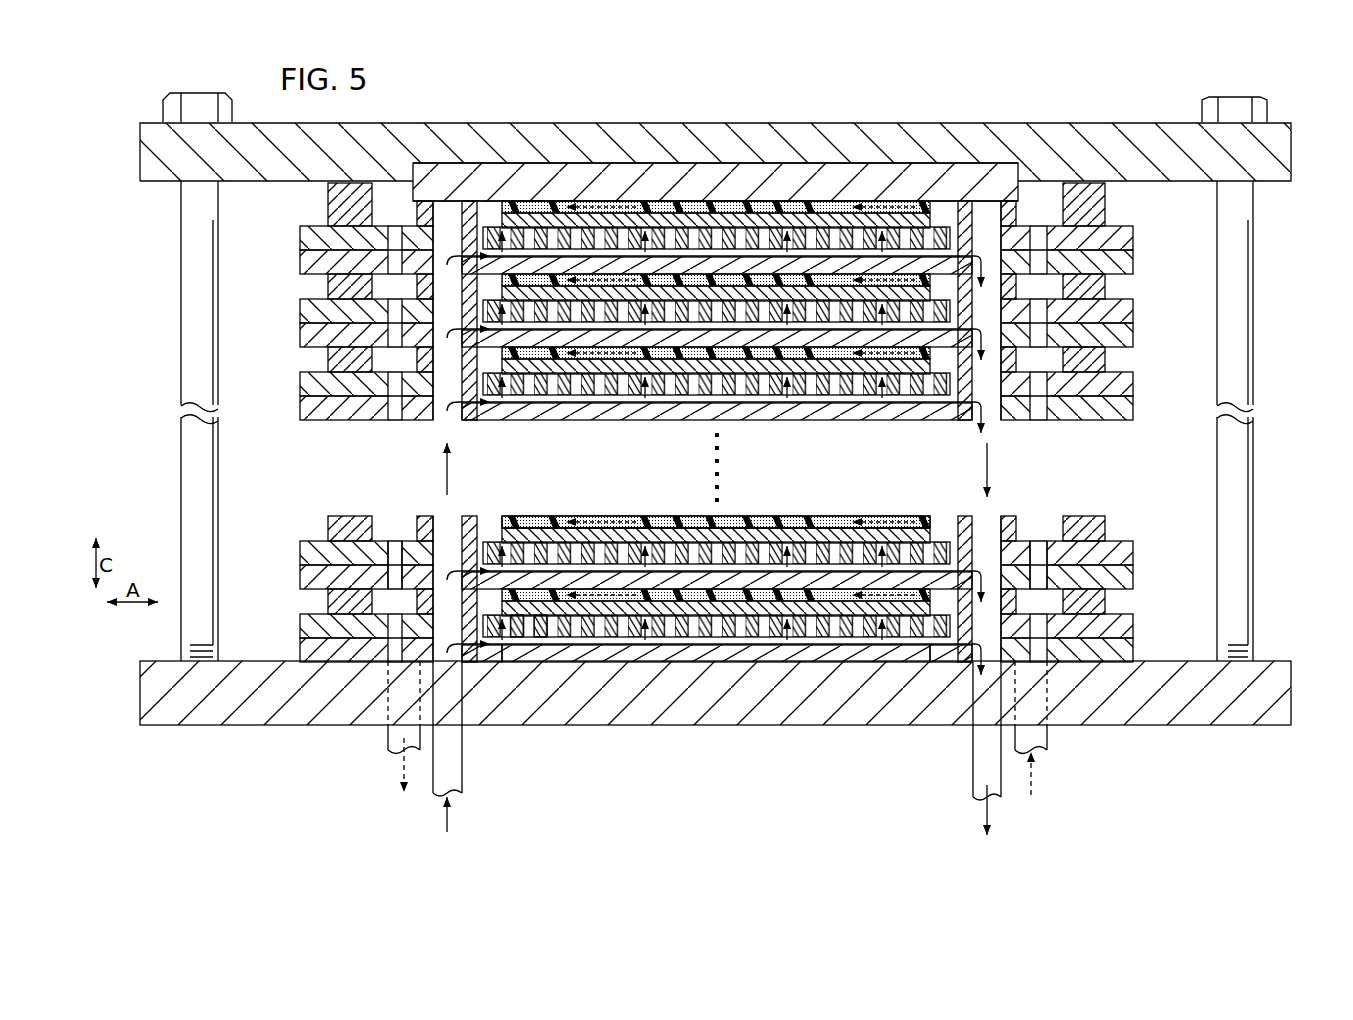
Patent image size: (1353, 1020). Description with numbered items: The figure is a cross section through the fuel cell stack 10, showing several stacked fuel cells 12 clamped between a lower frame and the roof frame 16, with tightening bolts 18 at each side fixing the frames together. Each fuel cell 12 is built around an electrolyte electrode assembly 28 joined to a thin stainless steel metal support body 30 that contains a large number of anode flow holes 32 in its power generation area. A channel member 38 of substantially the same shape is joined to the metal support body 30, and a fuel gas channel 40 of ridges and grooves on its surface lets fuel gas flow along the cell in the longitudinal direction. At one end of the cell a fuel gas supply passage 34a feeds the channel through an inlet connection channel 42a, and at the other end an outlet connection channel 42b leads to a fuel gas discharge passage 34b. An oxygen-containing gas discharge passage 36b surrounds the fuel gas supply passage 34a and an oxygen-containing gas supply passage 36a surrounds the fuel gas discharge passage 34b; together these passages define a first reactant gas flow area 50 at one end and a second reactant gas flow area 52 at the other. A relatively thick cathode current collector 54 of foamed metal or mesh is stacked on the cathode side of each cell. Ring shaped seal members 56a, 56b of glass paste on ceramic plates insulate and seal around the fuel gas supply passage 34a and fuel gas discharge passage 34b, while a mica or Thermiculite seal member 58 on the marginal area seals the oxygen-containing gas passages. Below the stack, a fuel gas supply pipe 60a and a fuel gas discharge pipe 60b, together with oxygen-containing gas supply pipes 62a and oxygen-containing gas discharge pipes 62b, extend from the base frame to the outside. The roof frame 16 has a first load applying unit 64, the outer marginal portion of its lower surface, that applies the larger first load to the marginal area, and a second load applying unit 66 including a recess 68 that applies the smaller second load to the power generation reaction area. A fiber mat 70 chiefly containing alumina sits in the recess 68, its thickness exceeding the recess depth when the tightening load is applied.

The fuel cell stack 10 is at (717, 86).
The fuel cell 12 is at (1145, 231).
The roof frame 16 is at (1132, 120).
The tightening bolt 18 is at (1240, 107).
The electrolyte electrode assembly 28 is at (762, 615).
The metal support body 30 is at (800, 637).
The anode flow hole 32 is at (550, 637).
The fuel gas supply passage 34a is at (448, 548).
The fuel gas discharge passage 34b is at (988, 548).
The oxygen-containing gas supply passage 36a is at (1038, 548).
The oxygen-containing gas discharge passage 36b is at (395, 548).
The channel member 38 is at (848, 657).
The fuel gas channel 40 is at (622, 637).
The inlet connection channel 42a is at (478, 648).
The outlet connection channel 42b is at (963, 647).
The first reactant gas flow area 50 is at (372, 480).
The second reactant gas flow area 52 is at (1063, 482).
The cathode current collector 54 is at (760, 514).
The ring shaped seal member 56a is at (464, 530).
The ring shaped seal member 56b is at (969, 530).
The seal member 58 is at (1089, 527).
The fuel gas supply pipe 60a is at (453, 763).
The fuel gas discharge pipe 60b is at (980, 765).
The oxygen-containing gas supply pipe 62a is at (1042, 742).
The oxygen-containing gas discharge pipe 62b is at (393, 735).
The first load applying unit 64 is at (290, 182).
The second load applying unit 66 is at (831, 160).
The recess 68 is at (917, 166).
The fiber mat 70 is at (742, 177).